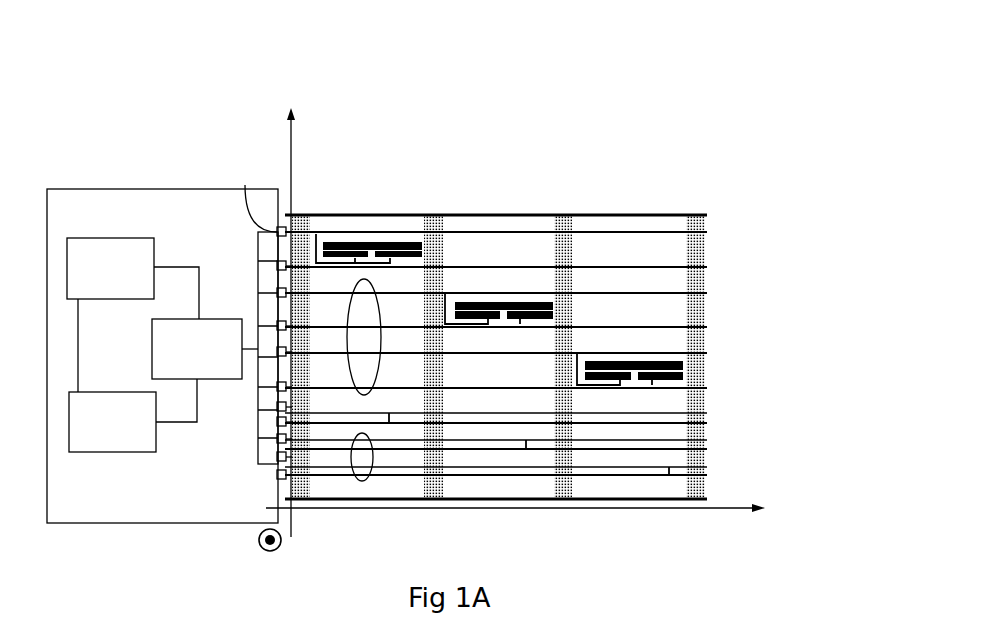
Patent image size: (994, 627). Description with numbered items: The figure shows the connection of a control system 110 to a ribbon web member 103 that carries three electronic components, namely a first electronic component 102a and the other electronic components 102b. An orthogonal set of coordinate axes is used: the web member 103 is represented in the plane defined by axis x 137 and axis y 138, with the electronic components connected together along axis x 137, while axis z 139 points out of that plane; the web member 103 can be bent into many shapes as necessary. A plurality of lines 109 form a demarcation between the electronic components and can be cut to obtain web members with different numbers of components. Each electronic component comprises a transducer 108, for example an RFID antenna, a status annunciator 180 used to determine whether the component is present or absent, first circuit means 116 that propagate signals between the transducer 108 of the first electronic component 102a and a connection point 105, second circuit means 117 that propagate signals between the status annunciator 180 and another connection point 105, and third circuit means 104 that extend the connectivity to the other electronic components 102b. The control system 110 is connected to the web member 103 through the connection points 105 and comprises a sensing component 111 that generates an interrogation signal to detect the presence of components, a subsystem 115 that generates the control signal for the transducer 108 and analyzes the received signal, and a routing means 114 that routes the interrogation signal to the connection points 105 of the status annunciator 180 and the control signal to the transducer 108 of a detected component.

The control system 110 is at (123, 530).
The sensing component 111 is at (133, 315).
The routing means 114 is at (205, 370).
The subsystem 115 is at (112, 422).
The connection point 105 is at (271, 262).
The first circuit means 116 is at (308, 222).
The lines 109 is at (309, 212).
The ribbon web member 103 is at (717, 368).
The first electronic component 102a is at (364, 207).
The other electronic components 102b is at (628, 213).
The second circuit means 117 is at (320, 423).
The status annunciator 180 is at (667, 476).
The transducer 108 is at (628, 356).
The third circuit means 104 is at (368, 396).
The axis y 138 is at (263, 98).
The axis x 137 is at (738, 532).
The axis z 139 is at (233, 551).